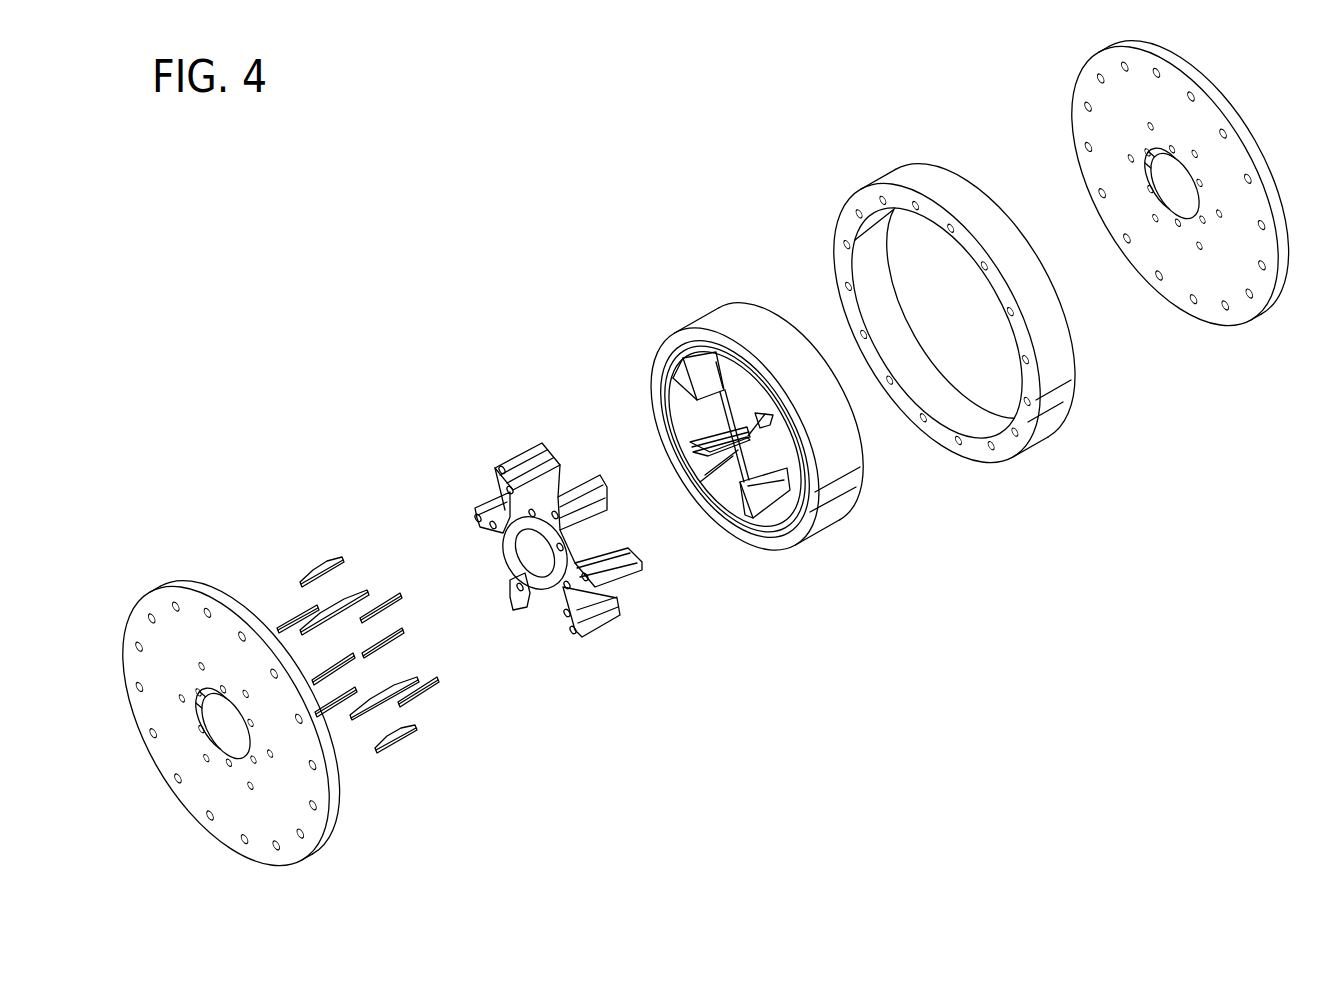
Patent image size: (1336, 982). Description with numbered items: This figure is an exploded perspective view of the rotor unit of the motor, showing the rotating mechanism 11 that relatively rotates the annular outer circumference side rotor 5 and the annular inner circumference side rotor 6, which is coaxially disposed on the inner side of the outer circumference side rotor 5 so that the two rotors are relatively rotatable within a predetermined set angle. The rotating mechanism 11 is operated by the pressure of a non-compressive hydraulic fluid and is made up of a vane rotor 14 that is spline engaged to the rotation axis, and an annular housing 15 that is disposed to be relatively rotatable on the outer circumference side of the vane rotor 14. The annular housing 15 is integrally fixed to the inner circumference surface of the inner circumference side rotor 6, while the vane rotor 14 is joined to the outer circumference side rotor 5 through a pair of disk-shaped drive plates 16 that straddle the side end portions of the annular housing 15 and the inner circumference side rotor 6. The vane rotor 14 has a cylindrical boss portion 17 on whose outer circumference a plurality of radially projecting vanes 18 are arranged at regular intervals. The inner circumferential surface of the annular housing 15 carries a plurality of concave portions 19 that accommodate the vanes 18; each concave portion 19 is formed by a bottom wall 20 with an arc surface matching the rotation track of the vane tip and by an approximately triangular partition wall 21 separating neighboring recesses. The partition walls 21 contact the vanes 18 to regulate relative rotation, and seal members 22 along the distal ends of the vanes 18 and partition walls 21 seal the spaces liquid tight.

The outer circumference side rotor 5 is at (1042, 432).
The inner circumference side rotor 6 is at (830, 523).
The rotating mechanism 11 is at (647, 511).
The vane rotor 14 is at (519, 536).
The annular housing 15 is at (752, 487).
The drive plate 16 is at (200, 806).
The boss portion 17 is at (495, 537).
The vane 18 is at (572, 478).
The concave portion 19 is at (715, 478).
The bottom wall 20 is at (725, 488).
The partition wall 21 is at (690, 452).
The seal member 22 is at (420, 693).